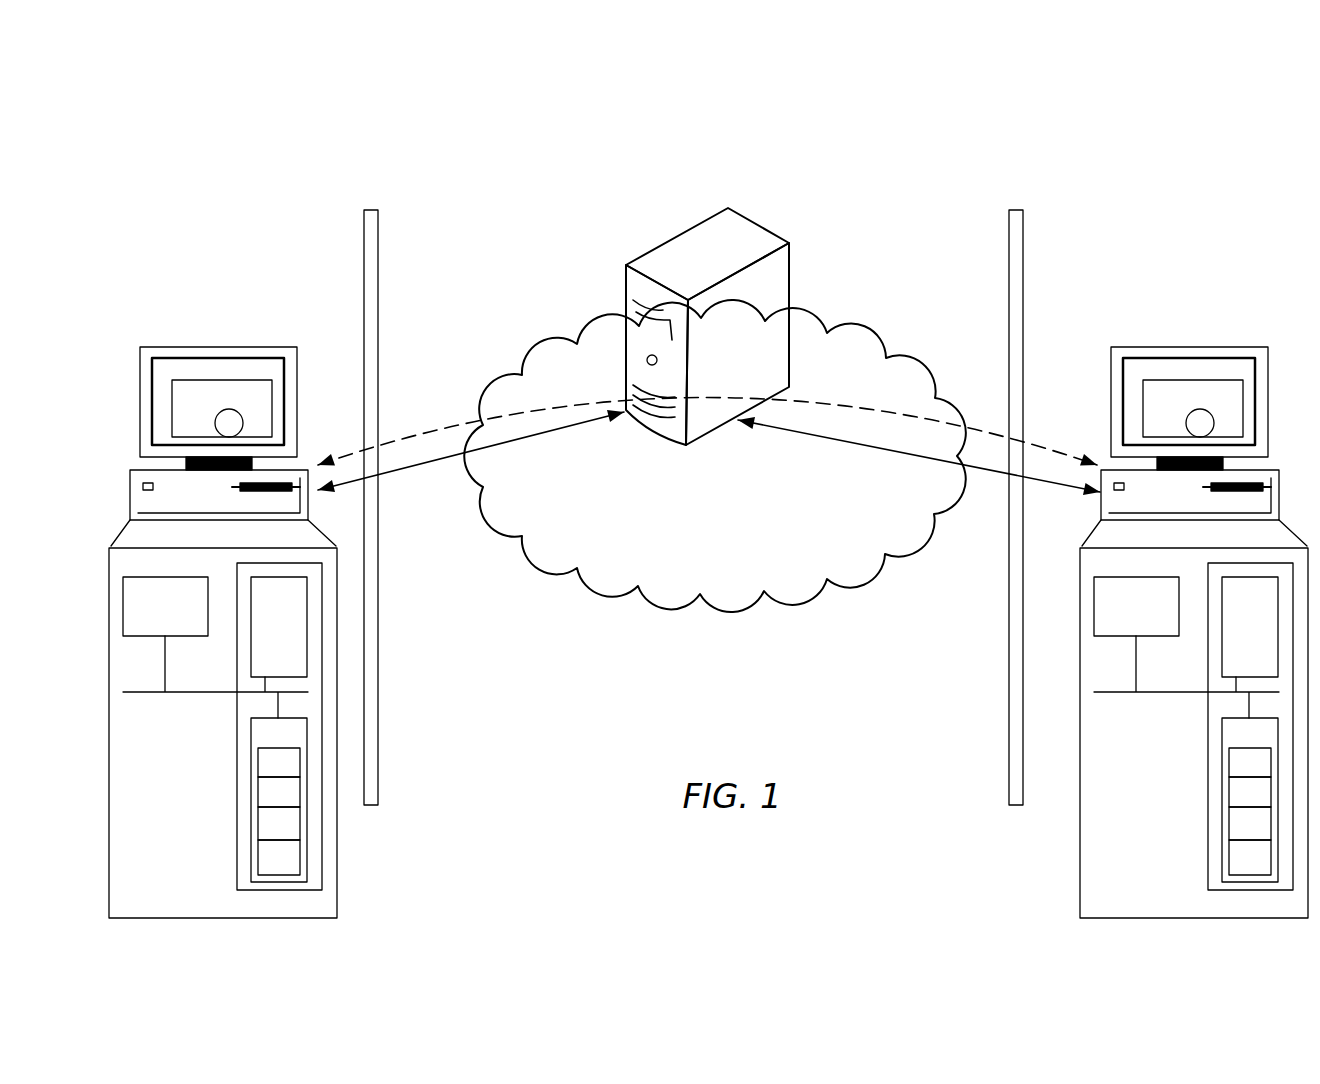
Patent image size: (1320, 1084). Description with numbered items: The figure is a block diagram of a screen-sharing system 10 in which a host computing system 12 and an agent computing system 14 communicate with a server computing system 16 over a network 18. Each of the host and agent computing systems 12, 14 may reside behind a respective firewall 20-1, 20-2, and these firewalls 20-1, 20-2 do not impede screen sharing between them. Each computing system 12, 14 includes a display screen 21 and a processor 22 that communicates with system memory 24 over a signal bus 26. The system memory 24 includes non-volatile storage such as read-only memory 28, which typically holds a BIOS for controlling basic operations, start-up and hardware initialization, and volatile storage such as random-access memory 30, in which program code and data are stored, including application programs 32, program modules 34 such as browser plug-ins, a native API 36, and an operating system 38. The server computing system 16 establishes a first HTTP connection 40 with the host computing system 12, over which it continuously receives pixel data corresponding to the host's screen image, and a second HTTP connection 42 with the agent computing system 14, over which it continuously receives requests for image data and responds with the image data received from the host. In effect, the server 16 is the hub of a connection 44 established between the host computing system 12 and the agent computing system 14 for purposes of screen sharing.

The screen-sharing system 10 is at (320, 155).
The host computing system 12 is at (195, 347).
The agent computing system 14 is at (1195, 601).
The server computing system 16 is at (708, 255).
The network 18 is at (706, 491).
The firewall 20-1 is at (364, 305).
The firewall 20-2 is at (1023, 280).
The display screen 21 is at (161, 423).
The processor 22 is at (153, 617).
The system memory 24 is at (237, 793).
The signal bus 26 is at (180, 694).
The read-only memory (ROM) 28 is at (266, 609).
The random-access memory (RAM) 30 is at (266, 744).
The application programs 32 is at (267, 774).
The program modules 34 is at (267, 804).
The native API 36 is at (267, 836).
The operating system 38 is at (267, 870).
The first HTTP connection 40 is at (408, 477).
The second HTTP connection 42 is at (985, 475).
The connection 44 is at (435, 420).